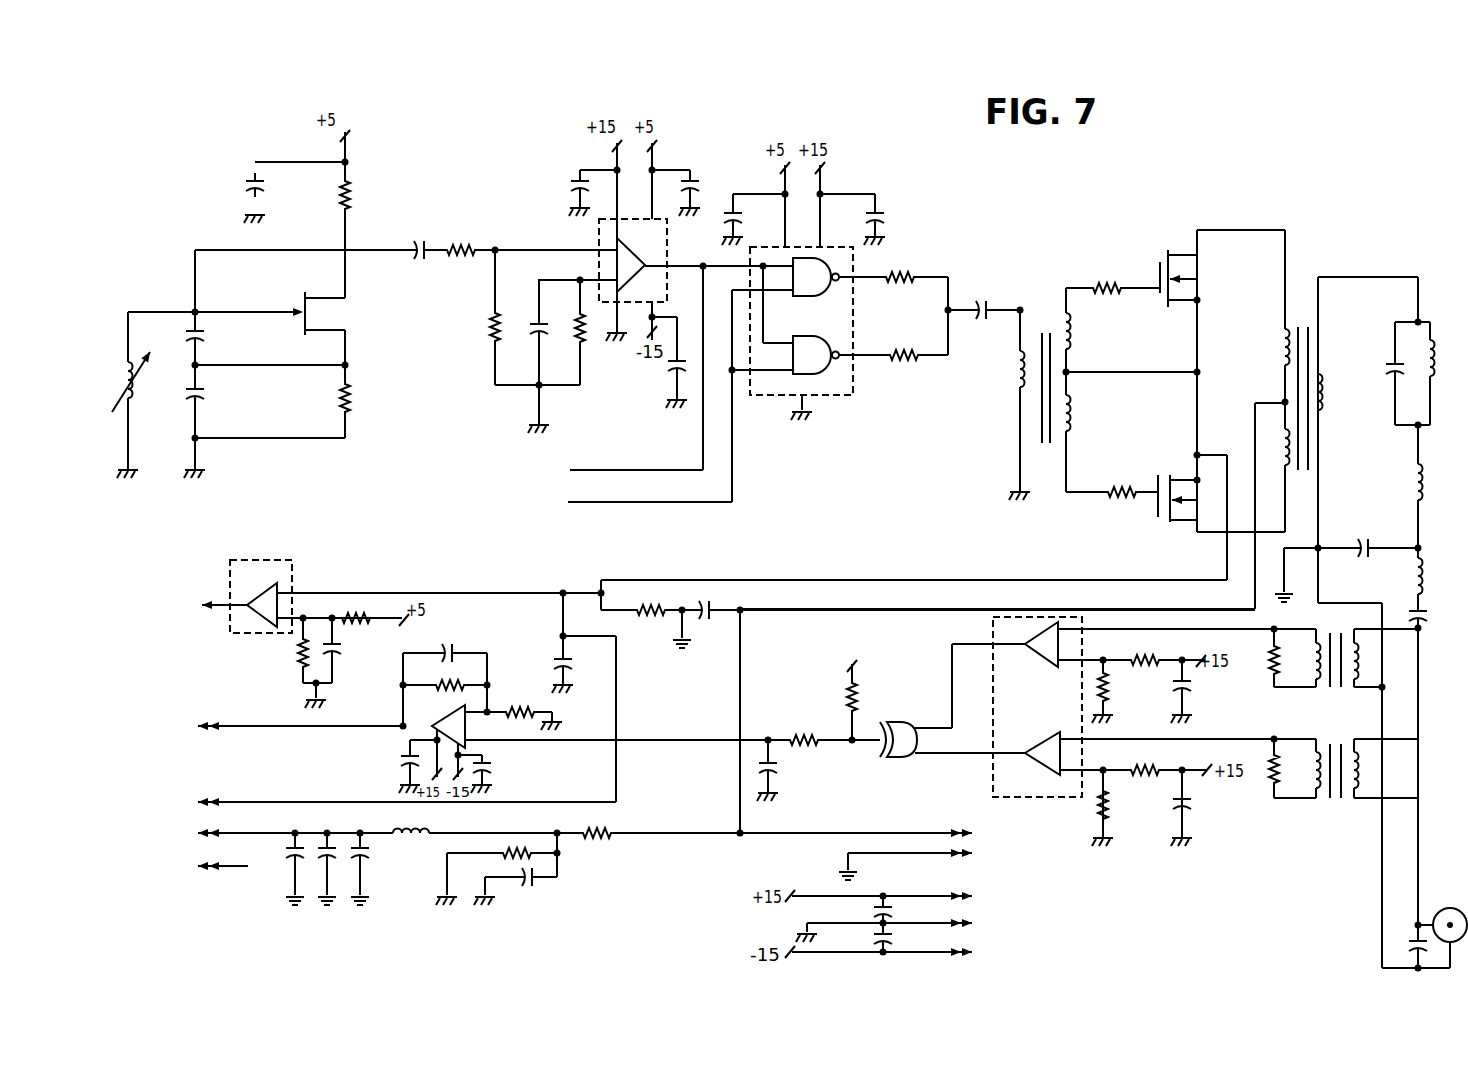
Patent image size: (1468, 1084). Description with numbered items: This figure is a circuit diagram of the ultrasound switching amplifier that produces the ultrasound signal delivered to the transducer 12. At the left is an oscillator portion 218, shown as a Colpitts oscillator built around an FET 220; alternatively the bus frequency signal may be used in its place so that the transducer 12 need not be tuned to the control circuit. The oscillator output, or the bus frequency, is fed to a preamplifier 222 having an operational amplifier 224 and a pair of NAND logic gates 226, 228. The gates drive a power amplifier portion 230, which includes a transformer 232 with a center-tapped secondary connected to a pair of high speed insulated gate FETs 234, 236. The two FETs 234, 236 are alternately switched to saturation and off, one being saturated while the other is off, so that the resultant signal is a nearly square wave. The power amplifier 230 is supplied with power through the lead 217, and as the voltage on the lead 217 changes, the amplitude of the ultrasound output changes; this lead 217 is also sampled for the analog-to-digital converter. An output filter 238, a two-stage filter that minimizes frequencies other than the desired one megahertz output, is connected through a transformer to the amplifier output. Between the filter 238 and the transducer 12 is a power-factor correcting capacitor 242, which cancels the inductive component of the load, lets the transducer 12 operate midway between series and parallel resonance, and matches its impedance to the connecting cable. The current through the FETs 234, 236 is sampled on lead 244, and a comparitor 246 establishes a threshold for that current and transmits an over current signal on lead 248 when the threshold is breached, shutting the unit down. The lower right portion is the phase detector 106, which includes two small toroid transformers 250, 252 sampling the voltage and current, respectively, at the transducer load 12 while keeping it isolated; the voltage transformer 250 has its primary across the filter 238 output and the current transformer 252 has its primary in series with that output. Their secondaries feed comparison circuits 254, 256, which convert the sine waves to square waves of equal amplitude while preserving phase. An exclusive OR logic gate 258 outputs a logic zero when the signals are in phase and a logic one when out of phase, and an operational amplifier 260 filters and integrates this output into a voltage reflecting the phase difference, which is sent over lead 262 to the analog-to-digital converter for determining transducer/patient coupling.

The transducer 12 is at (1450, 907).
The phase detector 106 is at (1141, 841).
The lead 217 is at (276, 833).
The oscillator portion 218 is at (369, 204).
The FET 220 is at (336, 329).
The preamplifier 222 is at (707, 171).
The operational amplifier 224 is at (641, 249).
The NAND logic gate 226 is at (838, 265).
The NAND logic gate 228 is at (838, 343).
The power amplifier portion 230 is at (1071, 247).
The transformer 232 is at (1020, 309).
The high speed FET 234 is at (1208, 291).
The high speed FET 236 is at (1184, 460).
The output filter 238 is at (1438, 325).
The power-factor correcting capacitor 242 is at (1411, 942).
The lead 244 is at (283, 800).
The comparitor 246 is at (260, 560).
The lead 248 is at (222, 600).
The voltage transformer 250 is at (1292, 690).
The current transformer 252 is at (1285, 800).
The comparison circuit 254 is at (1043, 668).
The comparison circuit 256 is at (1043, 772).
The exclusive OR logic gate 258 is at (896, 723).
The operational amplifier 260 is at (430, 731).
The lead 262 is at (287, 724).